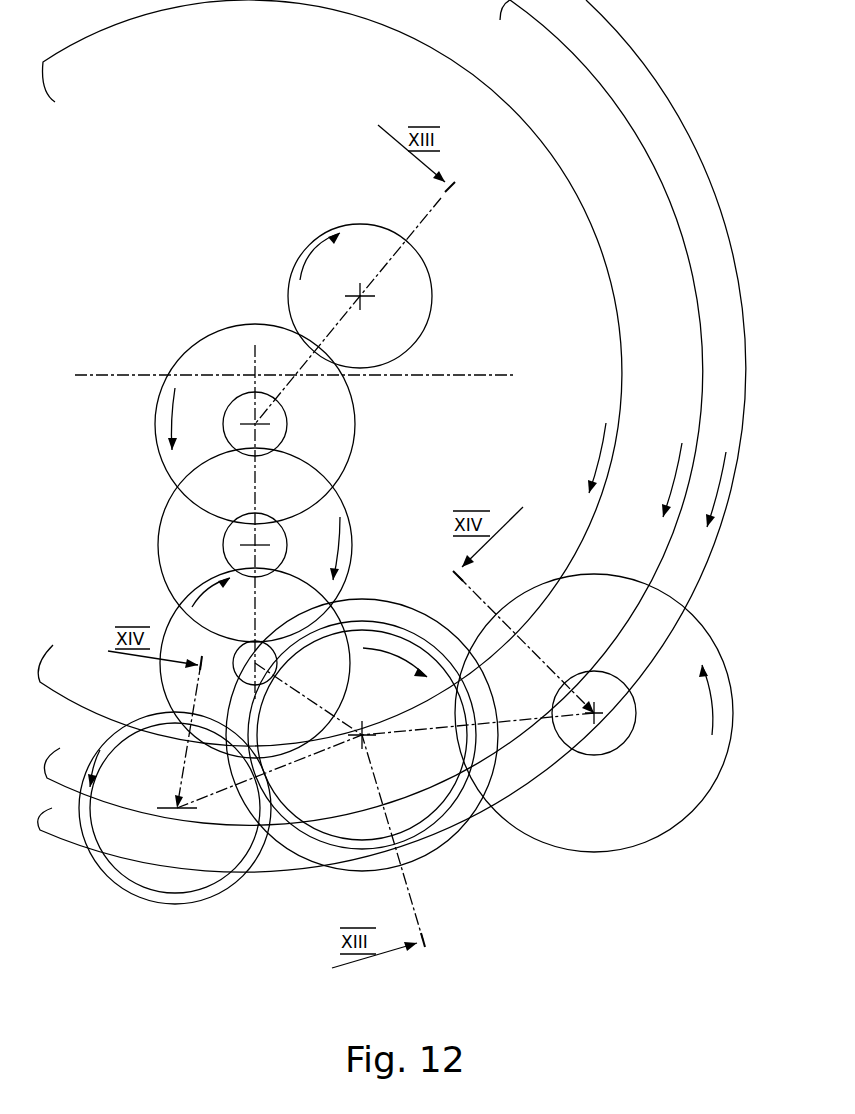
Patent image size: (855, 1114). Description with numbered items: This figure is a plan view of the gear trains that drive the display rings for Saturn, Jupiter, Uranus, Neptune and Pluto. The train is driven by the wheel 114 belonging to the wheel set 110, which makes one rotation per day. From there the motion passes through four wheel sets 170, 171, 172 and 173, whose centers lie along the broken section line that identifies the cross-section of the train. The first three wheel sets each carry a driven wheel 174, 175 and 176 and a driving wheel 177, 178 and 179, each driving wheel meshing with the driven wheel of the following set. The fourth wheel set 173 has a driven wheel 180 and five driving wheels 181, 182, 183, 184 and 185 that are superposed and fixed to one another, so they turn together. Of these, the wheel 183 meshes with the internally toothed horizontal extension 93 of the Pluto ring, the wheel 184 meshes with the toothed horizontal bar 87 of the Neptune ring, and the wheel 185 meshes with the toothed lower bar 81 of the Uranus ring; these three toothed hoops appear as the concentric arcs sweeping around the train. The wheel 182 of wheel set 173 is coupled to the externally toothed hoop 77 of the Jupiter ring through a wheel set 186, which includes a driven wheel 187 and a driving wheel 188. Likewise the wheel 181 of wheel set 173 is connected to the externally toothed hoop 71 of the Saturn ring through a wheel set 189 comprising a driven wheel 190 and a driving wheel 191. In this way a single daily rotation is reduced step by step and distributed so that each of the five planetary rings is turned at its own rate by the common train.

The hoop 71 is at (395, 412).
The hoop 77 is at (617, 311).
The lower bar 81 is at (671, 95).
The horizontal bar 87 is at (413, 436).
The horizontal extension 93 is at (722, 203).
The wheel set 110 is at (409, 296).
The wheel 114 is at (434, 295).
The wheel set 170 is at (253, 424).
The wheel set 171 is at (245, 545).
The wheel set 172 is at (250, 654).
The wheel set 173 is at (418, 787).
The driven wheel 174 is at (343, 435).
The driven wheel 175 is at (337, 507).
The driven wheel 176 is at (330, 600).
The driving wheel 177 is at (283, 420).
The driving wheel 178 is at (227, 545).
The driving wheel 179 is at (233, 655).
The driven wheel 180 is at (418, 763).
The driving wheel 181 is at (290, 826).
The driving wheel 182 is at (418, 753).
The driving wheel 183 is at (418, 753).
The driving wheel 184 is at (418, 753).
The driving wheel 185 is at (438, 853).
The wheel set 186 is at (154, 843).
The driven wheel 187 is at (195, 900).
The driving wheel 188 is at (167, 883).
The wheel set 189 is at (653, 853).
The driven wheel 190 is at (616, 746).
The driving wheel 191 is at (620, 748).